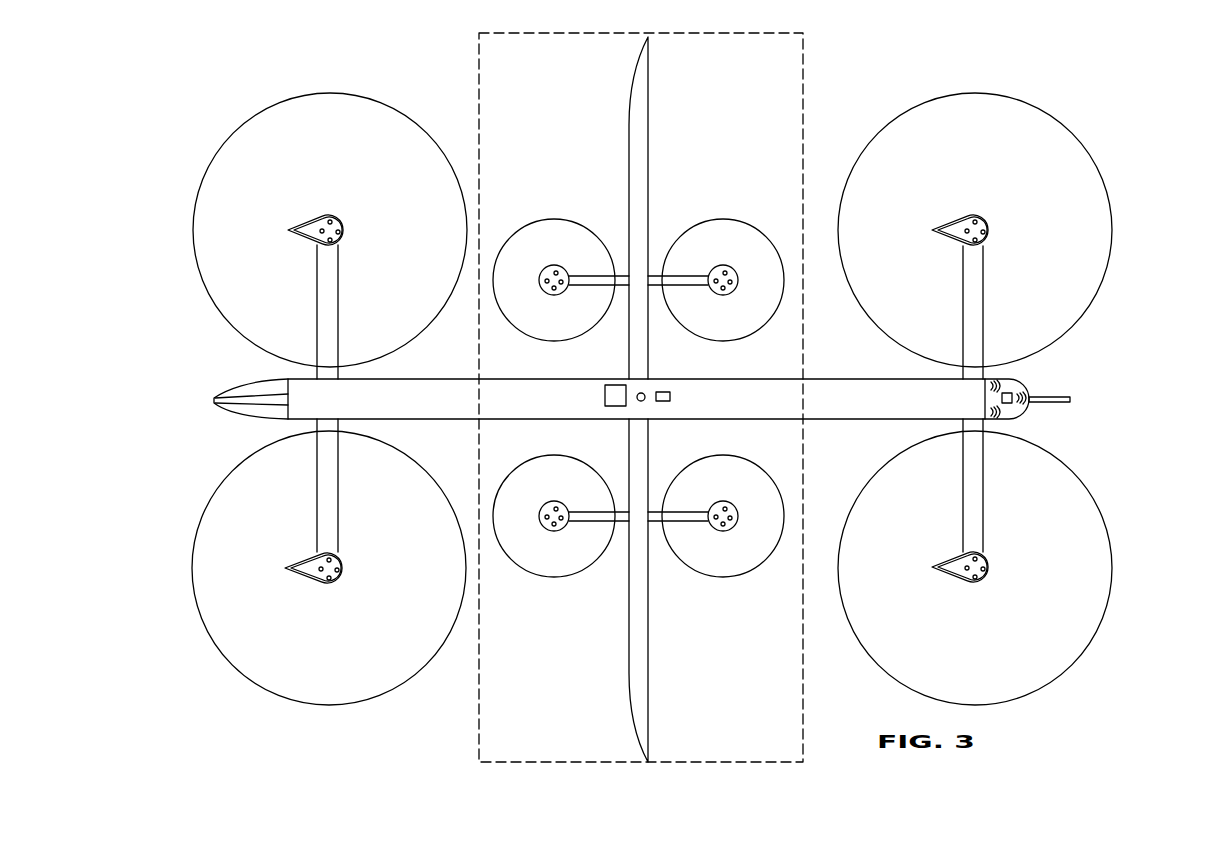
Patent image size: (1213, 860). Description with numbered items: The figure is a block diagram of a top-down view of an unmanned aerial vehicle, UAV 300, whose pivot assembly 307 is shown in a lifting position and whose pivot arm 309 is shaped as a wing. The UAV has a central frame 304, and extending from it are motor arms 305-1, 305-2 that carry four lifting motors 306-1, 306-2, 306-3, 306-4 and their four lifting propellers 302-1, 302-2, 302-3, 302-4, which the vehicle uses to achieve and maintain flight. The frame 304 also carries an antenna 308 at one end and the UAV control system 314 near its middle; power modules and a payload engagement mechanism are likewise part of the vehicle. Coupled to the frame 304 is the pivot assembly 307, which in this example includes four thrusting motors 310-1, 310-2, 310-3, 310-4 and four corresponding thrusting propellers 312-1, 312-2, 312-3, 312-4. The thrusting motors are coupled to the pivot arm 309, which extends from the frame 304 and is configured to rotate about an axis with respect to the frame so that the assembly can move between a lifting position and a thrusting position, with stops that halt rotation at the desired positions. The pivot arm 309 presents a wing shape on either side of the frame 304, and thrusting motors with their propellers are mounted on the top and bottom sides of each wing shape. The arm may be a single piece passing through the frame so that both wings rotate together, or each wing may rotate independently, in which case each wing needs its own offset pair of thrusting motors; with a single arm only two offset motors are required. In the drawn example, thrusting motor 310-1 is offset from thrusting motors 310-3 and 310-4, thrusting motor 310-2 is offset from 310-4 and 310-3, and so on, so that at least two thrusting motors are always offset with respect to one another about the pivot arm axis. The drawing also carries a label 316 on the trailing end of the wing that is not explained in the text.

The UAV 300 is at (1114, 132).
The lifting propeller 302-1 is at (1023, 128).
The lifting propeller 302-2 is at (1073, 497).
The lifting propeller 302-3 is at (210, 611).
The lifting propeller 302-4 is at (378, 130).
The frame 304 is at (853, 385).
The motor arm 305-1 is at (975, 298).
The motor arm 305-2 is at (330, 300).
The lifting motor 306-1 is at (958, 222).
The lifting motor 306-2 is at (958, 572).
The lifting motor 306-3 is at (312, 572).
The lifting motor 306-4 is at (315, 226).
The pivot assembly 307 is at (803, 86).
The antenna 308 is at (1070, 391).
The pivot arm 309 is at (640, 445).
The thrusting motor 310-1 is at (737, 278).
The thrusting motor 310-2 is at (731, 526).
The thrusting motor 310-3 is at (545, 278).
The thrusting motor 310-4 is at (545, 527).
The thrusting propeller 312-1 is at (694, 236).
The thrusting propeller 312-2 is at (694, 555).
The thrusting propeller 312-3 is at (588, 236).
The thrusting propeller 312-4 is at (585, 548).
The UAV control system 314 is at (615, 390).
The wing tip 316 is at (648, 673).